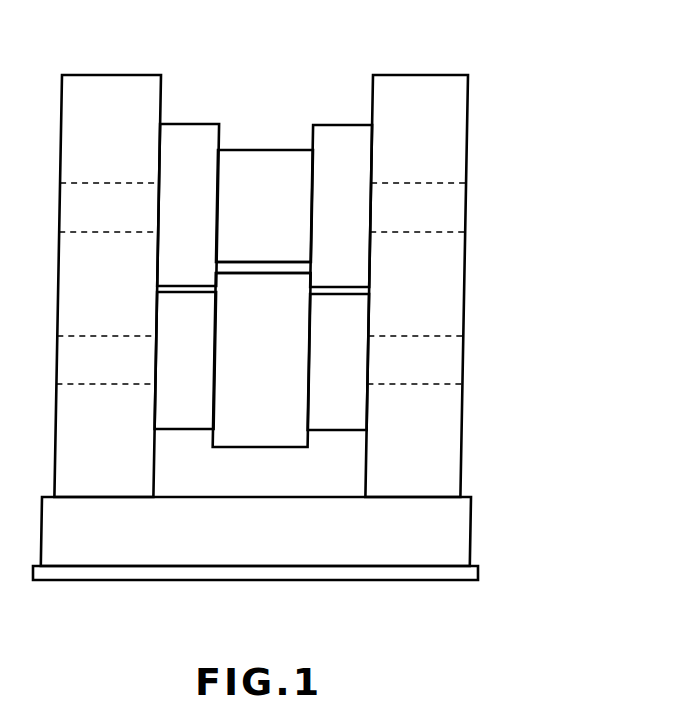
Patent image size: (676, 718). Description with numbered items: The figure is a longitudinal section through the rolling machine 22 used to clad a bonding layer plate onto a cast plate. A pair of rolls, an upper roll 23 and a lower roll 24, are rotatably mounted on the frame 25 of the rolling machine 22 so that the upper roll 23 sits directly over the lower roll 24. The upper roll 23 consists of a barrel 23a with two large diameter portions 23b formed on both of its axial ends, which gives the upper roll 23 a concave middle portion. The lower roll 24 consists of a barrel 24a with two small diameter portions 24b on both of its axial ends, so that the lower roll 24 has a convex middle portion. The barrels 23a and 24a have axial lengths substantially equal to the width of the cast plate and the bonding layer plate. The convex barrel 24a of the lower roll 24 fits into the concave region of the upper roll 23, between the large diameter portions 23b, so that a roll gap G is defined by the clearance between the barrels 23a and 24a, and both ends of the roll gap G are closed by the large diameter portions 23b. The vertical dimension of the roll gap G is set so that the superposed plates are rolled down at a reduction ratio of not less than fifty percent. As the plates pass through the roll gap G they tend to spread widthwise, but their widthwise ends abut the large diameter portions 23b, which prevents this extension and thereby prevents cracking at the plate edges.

The rolling machine 22 is at (485, 60).
The upper roll 23 is at (269, 147).
The barrel 23a is at (278, 150).
The large diameter portions 23b is at (202, 124).
The lower roll 24 is at (255, 426).
The barrel 24a is at (277, 447).
The small diameter portions 24b is at (182, 430).
The frame 25 is at (467, 146).
The roll gap G is at (256, 268).